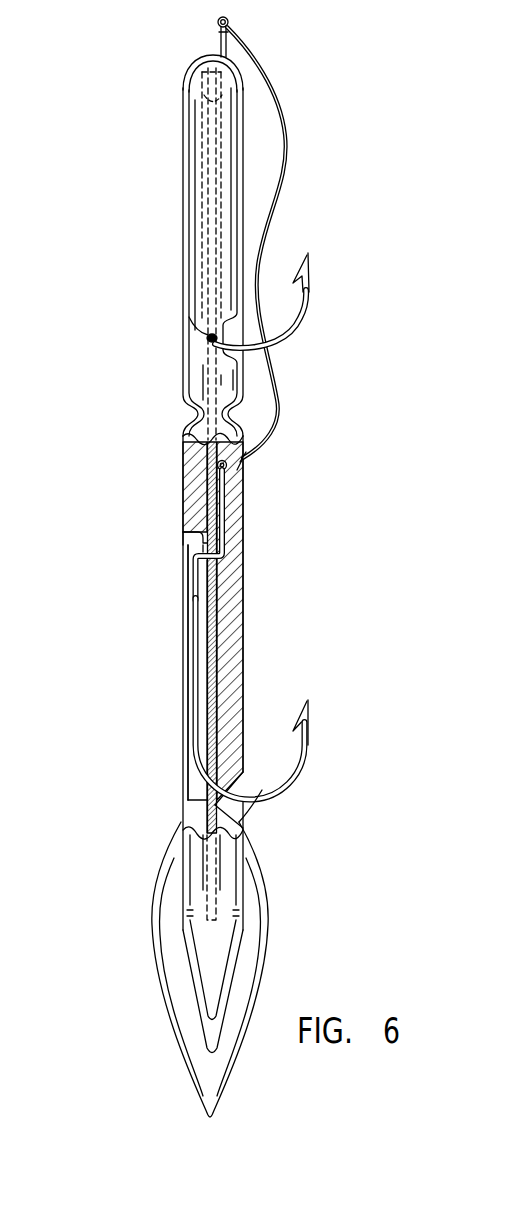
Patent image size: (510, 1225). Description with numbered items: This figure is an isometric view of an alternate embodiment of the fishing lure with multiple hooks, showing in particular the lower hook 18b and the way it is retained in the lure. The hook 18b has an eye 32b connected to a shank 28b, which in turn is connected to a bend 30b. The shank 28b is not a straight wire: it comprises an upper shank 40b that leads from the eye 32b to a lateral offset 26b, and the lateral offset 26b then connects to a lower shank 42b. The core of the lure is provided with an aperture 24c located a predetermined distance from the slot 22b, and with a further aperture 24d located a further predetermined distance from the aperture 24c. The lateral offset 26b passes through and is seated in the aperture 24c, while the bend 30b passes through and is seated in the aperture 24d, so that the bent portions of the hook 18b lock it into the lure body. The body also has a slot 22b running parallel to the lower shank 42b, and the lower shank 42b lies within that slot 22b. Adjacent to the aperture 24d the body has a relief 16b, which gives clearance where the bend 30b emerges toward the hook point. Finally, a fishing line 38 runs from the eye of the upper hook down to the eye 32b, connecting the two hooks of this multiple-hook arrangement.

The fishing line 38 is at (282, 100).
The eye 32b is at (183, 466).
The upper shank 40b is at (240, 473).
The lateral offset 26b is at (186, 572).
The shank 28b is at (246, 502).
The aperture 24c is at (203, 573).
The relief 16b is at (262, 778).
The hook 18b is at (318, 736).
The lower shank 42b is at (183, 675).
The aperture 24d is at (207, 787).
The bend 30b is at (283, 783).
The slot 22b is at (190, 807).